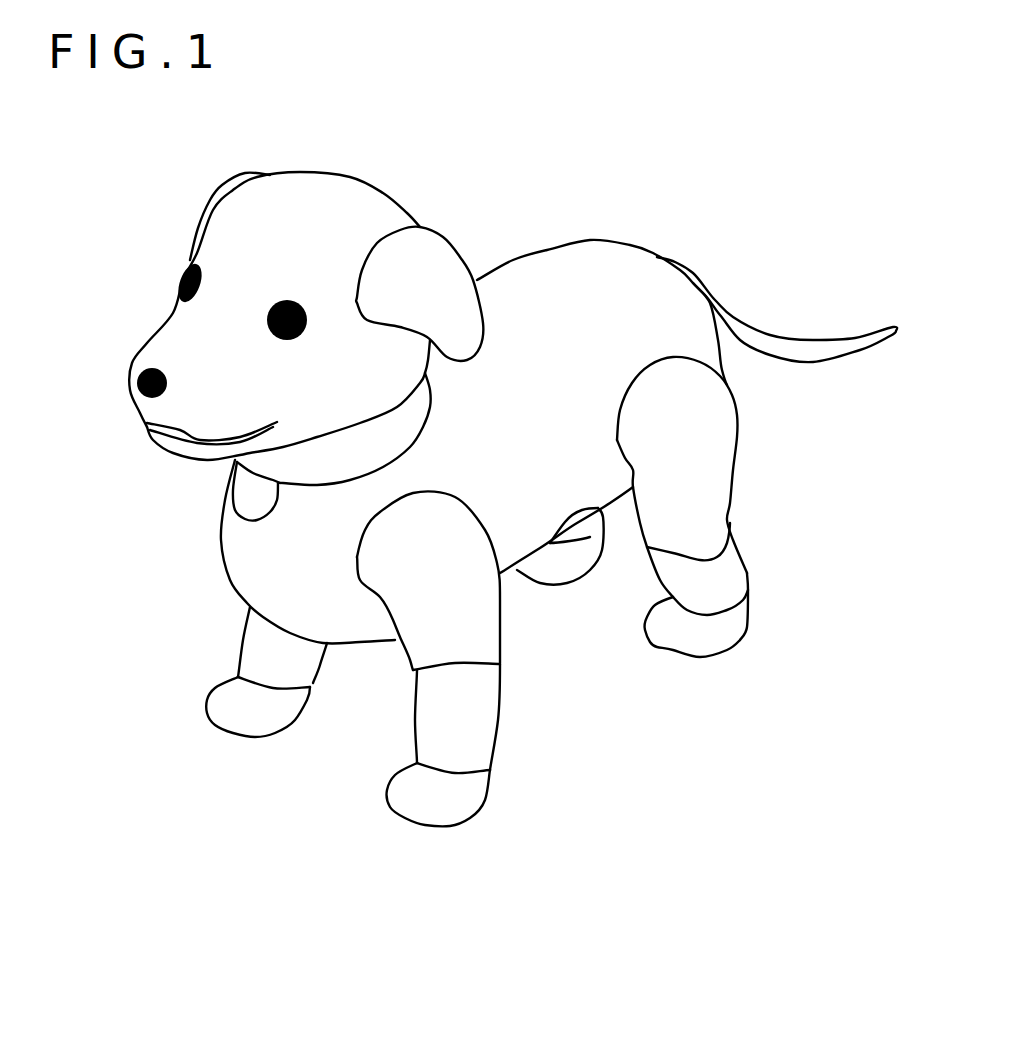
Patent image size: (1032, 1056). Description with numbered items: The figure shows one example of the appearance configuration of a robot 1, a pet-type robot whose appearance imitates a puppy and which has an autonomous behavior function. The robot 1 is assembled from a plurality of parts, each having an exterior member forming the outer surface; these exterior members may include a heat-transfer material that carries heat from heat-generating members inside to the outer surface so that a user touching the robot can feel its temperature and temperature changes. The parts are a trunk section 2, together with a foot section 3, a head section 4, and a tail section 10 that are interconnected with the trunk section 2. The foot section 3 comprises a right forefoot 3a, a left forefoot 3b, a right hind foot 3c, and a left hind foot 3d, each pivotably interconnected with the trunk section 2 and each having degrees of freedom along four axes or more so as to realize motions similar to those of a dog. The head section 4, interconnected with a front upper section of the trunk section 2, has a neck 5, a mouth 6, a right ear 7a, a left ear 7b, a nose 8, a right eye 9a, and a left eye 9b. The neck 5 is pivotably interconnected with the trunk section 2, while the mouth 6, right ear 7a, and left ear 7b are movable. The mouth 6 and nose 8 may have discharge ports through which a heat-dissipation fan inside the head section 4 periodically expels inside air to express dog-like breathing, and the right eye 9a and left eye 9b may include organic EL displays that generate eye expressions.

The robot 1 is at (475, 501).
The trunk section 2 is at (600, 288).
The foot section 3 is at (497, 595).
The right forefoot 3a is at (307, 668).
The left forefoot 3b is at (473, 717).
The right hind foot 3c is at (587, 527).
The left hind foot 3d is at (698, 549).
The head section 4 is at (268, 291).
The neck 5 is at (312, 468).
The mouth 6 is at (160, 435).
The right ear 7a is at (232, 183).
The left ear 7b is at (433, 263).
The nose 8 is at (128, 377).
The right eye 9a is at (190, 265).
The left eye 9b is at (263, 317).
The tail section 10 is at (743, 327).